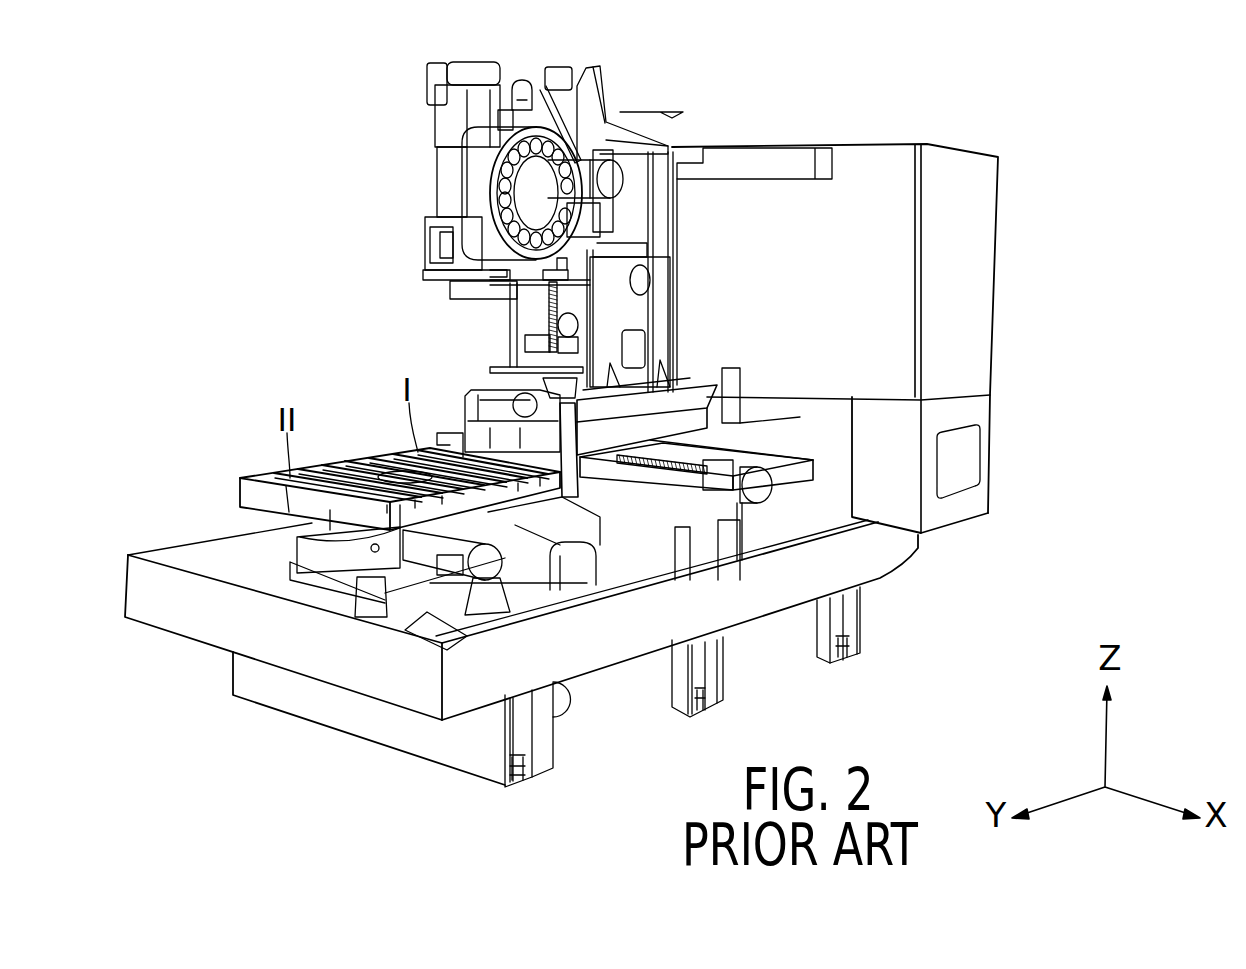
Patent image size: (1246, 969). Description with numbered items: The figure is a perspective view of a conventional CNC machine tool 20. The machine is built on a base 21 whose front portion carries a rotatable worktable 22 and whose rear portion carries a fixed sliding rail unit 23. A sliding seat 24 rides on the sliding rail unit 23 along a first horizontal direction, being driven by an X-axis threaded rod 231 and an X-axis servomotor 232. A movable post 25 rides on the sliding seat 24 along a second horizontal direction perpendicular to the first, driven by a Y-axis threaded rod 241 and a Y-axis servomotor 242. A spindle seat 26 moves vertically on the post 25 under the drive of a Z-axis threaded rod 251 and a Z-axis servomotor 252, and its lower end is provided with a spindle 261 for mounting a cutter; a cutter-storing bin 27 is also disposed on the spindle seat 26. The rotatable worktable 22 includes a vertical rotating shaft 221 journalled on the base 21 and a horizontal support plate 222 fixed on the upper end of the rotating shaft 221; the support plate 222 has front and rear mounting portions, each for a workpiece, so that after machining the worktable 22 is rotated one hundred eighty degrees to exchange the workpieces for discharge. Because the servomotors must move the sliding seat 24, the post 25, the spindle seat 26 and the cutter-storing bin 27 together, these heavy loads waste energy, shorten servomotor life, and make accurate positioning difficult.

The CNC machine tool 20 is at (1010, 291).
The base 21 is at (370, 683).
The rotatable worktable 22 is at (310, 538).
The vertical rotating shaft 221 is at (395, 462).
The horizontal support plate 222 is at (250, 495).
The sliding rail unit 23 is at (642, 537).
The X-axis threaded rod 231 is at (690, 475).
The X-axis servomotor 232 is at (767, 486).
The sliding seat 24 is at (700, 428).
The Y-axis threaded rod 241 is at (512, 370).
The Y-axis servomotor 242 is at (700, 372).
The movable post 25 is at (663, 318).
The Z-axis threaded rod 251 is at (555, 318).
The Z-axis servomotor 252 is at (548, 68).
The spindle seat 26 is at (440, 188).
The spindle 261 is at (455, 284).
The cutter-storing bin 27 is at (478, 157).